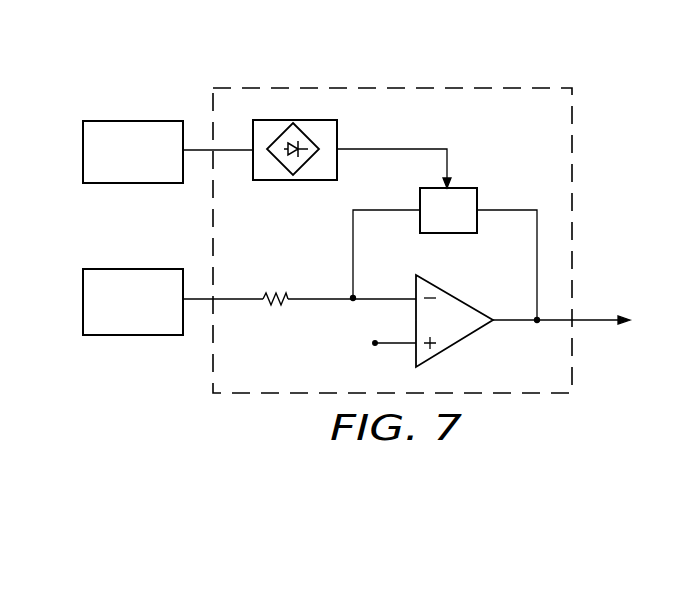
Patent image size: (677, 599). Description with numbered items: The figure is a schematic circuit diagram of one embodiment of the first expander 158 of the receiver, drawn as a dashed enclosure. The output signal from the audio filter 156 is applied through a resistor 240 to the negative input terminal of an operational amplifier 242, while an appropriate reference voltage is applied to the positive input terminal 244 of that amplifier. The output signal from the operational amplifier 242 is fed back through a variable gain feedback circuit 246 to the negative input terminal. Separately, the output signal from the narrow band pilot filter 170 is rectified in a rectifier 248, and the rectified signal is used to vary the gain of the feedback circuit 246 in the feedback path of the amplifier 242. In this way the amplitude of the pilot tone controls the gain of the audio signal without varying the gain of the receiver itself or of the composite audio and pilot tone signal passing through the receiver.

The audio filter 156 is at (167, 269).
The first expander 158 is at (572, 368).
The narrow band pilot filter 170 is at (178, 121).
The resistor 240 is at (263, 297).
The operational amplifier 242 is at (470, 338).
The positive input terminal 244 is at (376, 345).
The variable gain feedback circuit 246 is at (477, 190).
The rectifier 248 is at (337, 125).